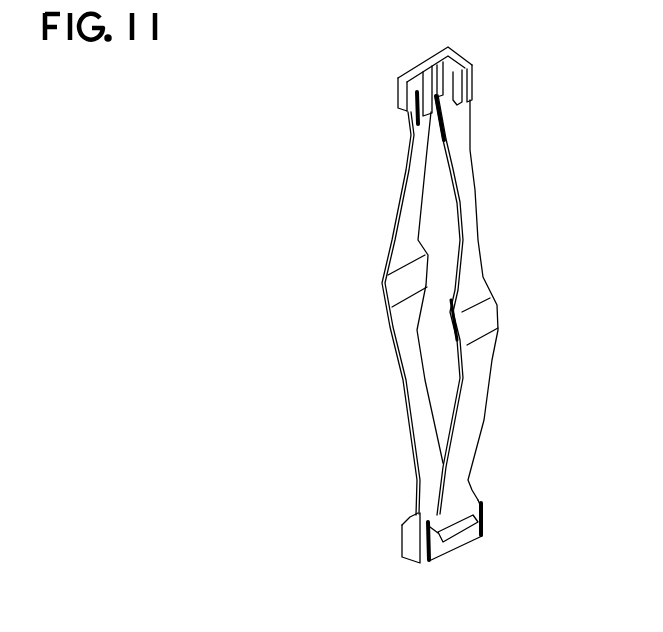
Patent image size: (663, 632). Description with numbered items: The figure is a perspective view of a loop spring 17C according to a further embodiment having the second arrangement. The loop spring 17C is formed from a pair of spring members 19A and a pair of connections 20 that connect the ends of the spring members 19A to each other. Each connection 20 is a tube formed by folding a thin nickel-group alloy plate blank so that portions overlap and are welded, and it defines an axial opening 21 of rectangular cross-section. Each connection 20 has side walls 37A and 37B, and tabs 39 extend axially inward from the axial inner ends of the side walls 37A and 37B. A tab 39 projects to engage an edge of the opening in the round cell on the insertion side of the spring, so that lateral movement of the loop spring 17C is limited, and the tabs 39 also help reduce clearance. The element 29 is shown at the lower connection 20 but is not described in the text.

The loop spring 17C is at (343, 387).
The spring member 19A is at (472, 211).
The axial opening 21 is at (435, 56).
The side wall 37A is at (455, 55).
The side wall 37B is at (398, 95).
The connection 20 is at (472, 70).
The tab 39 is at (463, 104).
The slot 29 is at (470, 542).